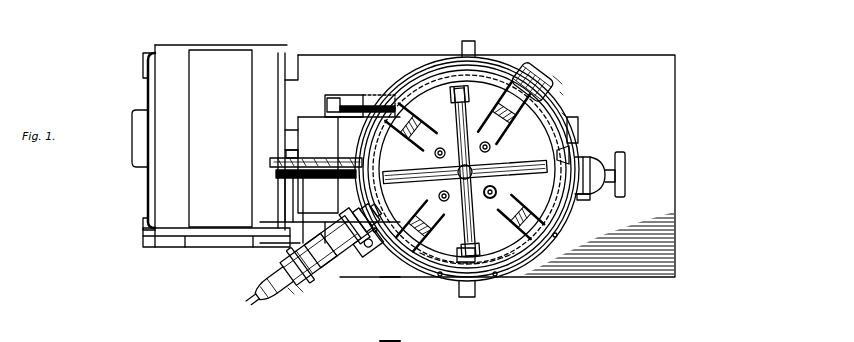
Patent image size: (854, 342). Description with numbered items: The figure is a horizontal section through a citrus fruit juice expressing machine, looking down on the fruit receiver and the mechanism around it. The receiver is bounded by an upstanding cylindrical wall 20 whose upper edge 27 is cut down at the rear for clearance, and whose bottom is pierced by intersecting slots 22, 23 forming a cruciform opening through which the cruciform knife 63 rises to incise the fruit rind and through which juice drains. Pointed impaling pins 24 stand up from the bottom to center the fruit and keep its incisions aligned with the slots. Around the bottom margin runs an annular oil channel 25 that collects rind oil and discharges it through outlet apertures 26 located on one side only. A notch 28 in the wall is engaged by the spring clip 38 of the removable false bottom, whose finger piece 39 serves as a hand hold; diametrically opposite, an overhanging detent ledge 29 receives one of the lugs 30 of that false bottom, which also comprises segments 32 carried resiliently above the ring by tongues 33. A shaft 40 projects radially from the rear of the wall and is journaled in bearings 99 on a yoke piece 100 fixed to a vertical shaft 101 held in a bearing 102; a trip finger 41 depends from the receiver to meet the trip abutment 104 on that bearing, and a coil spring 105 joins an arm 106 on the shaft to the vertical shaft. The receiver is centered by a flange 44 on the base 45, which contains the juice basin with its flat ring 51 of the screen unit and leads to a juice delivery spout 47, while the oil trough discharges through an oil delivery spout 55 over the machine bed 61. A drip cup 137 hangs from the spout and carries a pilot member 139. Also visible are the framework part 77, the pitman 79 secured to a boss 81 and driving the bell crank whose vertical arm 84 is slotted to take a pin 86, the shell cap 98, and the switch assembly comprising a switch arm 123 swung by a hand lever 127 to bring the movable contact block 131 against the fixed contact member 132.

The upstanding cylindrical wall of fruit receiver 20 is at (540, 270).
The through slot 22 is at (478, 262).
The through slot 23 is at (571, 150).
The impaling pin 24 is at (497, 190).
The annular oil channel 25 is at (500, 270).
The outlet aperture 26 is at (525, 268).
The upper edge of receiver wall 27 is at (560, 262).
The notch 28 is at (517, 72).
The overhanging detent ledge 29 is at (414, 189).
The lug 30 is at (405, 270).
The segment 32 is at (578, 120).
The tongue 33 is at (563, 113).
The spring clip 38 is at (561, 93).
The finger piece 39 is at (554, 76).
The shaft 40 is at (292, 294).
The trip finger 41 is at (362, 214).
The flange 44 is at (584, 160).
The base 45 is at (150, 200).
The juice delivery spout 47 is at (593, 196).
The flat ring 51 is at (490, 149).
The oil delivery spout 55 is at (468, 298).
The foundation part of machine bed 61 is at (676, 212).
The knife 63 is at (464, 89).
The framework part 77 is at (330, 231).
The pitman 79 is at (285, 182).
The boss 81 is at (313, 179).
The vertical arm of bell crank 84 is at (270, 162).
The pin 86 is at (290, 150).
The removable cap 98 is at (392, 341).
The bearing 99 is at (300, 292).
The yoke piece 100 is at (290, 264).
The vertical shaft 101 is at (350, 224).
The bearing 102 is at (335, 278).
The trip abutment 104 is at (372, 266).
The coil spring 105 is at (265, 303).
The arm 106 is at (262, 296).
The switch arm 123 is at (371, 100).
The operating hand lever 127 is at (469, 40).
The movable contact block 131 is at (311, 165).
The fixed contact member 132 is at (340, 95).
The drip cup 137 is at (611, 188).
The pilot member 139 is at (626, 178).